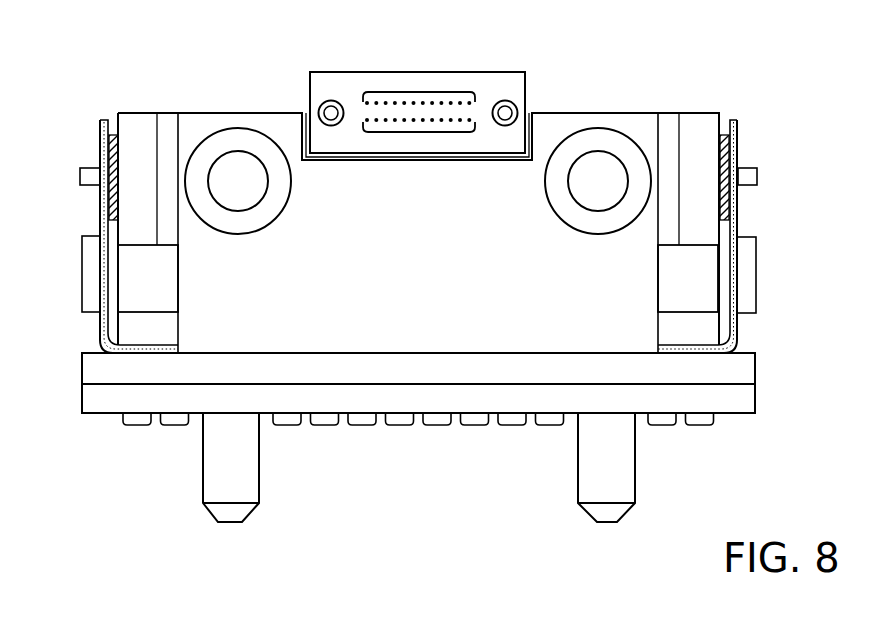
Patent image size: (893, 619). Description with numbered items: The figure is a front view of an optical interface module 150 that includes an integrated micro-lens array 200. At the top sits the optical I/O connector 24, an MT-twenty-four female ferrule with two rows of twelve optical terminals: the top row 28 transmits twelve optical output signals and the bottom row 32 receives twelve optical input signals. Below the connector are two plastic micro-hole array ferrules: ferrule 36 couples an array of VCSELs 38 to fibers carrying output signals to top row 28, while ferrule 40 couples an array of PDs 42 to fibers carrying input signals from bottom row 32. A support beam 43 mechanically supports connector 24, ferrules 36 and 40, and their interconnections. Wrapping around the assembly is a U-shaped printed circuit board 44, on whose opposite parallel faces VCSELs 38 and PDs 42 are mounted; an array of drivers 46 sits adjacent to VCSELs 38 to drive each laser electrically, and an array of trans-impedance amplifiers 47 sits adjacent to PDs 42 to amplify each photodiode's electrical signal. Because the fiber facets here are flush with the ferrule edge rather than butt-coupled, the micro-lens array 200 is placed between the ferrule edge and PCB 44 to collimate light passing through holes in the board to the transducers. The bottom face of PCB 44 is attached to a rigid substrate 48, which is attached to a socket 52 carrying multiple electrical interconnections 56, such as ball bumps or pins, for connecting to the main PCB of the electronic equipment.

The optical interface module 150 is at (72, 91).
The micro-lens array 200 is at (113, 132).
The optical I/O connector 24 is at (322, 78).
The top row 28 is at (415, 92).
The bottom row 32 is at (417, 133).
The ferrule 36 is at (126, 118).
The ferrule 40 is at (697, 118).
The VCSELs 38 is at (80, 174).
The PDs 42 is at (757, 174).
The support beam 43 is at (120, 287).
The U-shaped Printed Circuit Board 44 is at (102, 205).
The drivers 46 is at (90, 250).
The Trans-Impedance Amplifiers 47 is at (750, 265).
The rigid substrate 48 is at (752, 365).
The socket 52 is at (752, 400).
The electrical interconnections 56 is at (470, 426).